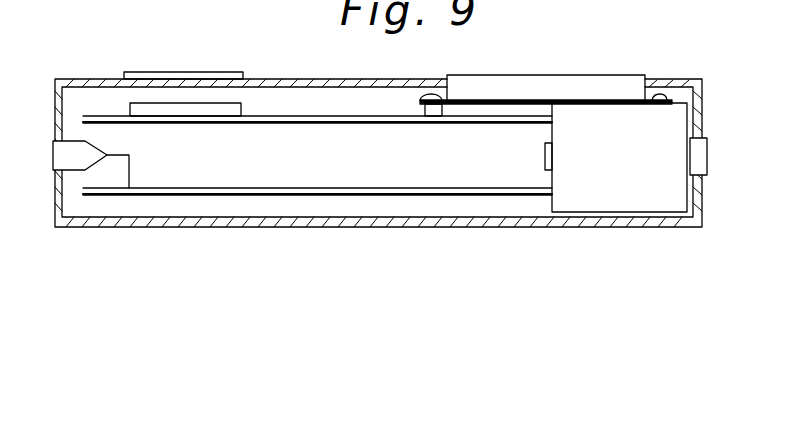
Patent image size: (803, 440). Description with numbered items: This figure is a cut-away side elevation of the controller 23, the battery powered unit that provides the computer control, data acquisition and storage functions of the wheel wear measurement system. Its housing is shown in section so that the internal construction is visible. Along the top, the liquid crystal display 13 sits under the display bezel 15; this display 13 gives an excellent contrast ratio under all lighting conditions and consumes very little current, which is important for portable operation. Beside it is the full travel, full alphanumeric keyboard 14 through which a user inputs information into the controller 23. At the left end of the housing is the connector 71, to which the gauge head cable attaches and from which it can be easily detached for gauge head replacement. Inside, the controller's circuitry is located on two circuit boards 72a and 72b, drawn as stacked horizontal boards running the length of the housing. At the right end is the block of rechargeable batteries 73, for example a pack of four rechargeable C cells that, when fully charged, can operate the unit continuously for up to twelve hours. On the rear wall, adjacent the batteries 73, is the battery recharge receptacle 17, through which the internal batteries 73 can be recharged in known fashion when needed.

The liquid crystal display 13 is at (129, 110).
The keyboard 14 is at (587, 77).
The display bezel 15 is at (186, 72).
The battery recharge receptacle 17 is at (707, 153).
The controller 23 is at (702, 214).
The connector 71 is at (53, 168).
The circuit board 72a is at (228, 186).
The circuit board 72b is at (412, 124).
The rechargeable batteries 73 is at (618, 198).